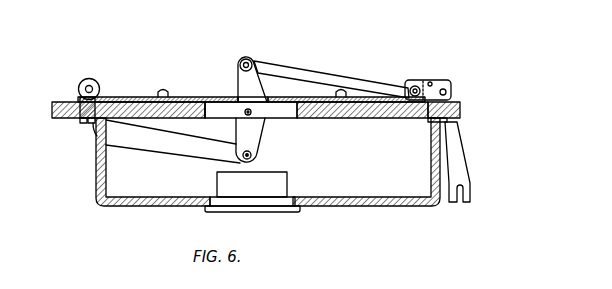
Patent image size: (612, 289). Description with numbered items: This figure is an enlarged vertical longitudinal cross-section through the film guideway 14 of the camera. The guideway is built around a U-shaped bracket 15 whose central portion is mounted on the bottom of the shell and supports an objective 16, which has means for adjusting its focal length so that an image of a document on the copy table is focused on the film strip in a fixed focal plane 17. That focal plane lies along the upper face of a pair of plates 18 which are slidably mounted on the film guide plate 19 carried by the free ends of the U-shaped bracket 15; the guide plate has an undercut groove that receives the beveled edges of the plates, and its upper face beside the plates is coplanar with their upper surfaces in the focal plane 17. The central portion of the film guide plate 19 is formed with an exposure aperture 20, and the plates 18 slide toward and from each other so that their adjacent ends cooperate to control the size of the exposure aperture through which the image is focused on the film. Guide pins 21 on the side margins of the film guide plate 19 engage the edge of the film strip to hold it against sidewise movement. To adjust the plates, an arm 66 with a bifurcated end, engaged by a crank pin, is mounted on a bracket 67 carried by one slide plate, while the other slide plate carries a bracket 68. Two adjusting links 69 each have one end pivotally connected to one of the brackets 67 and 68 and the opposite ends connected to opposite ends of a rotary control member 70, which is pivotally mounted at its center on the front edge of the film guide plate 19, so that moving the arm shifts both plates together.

The film guideway 14 is at (68, 125).
The U-shaped bracket 15 is at (98, 158).
The objective 16 is at (284, 188).
The focal plane 17 is at (212, 98).
The plates 18 is at (199, 97).
The film guide plate 19 is at (62, 103).
The exposure aperture 20 is at (289, 110).
The guide pins 21 is at (165, 90).
The arm 66 is at (452, 149).
The bracket 67 is at (413, 80).
The bracket 68 is at (99, 89).
The adjusting links 69 is at (167, 145).
The rotary control member 70 is at (256, 138).